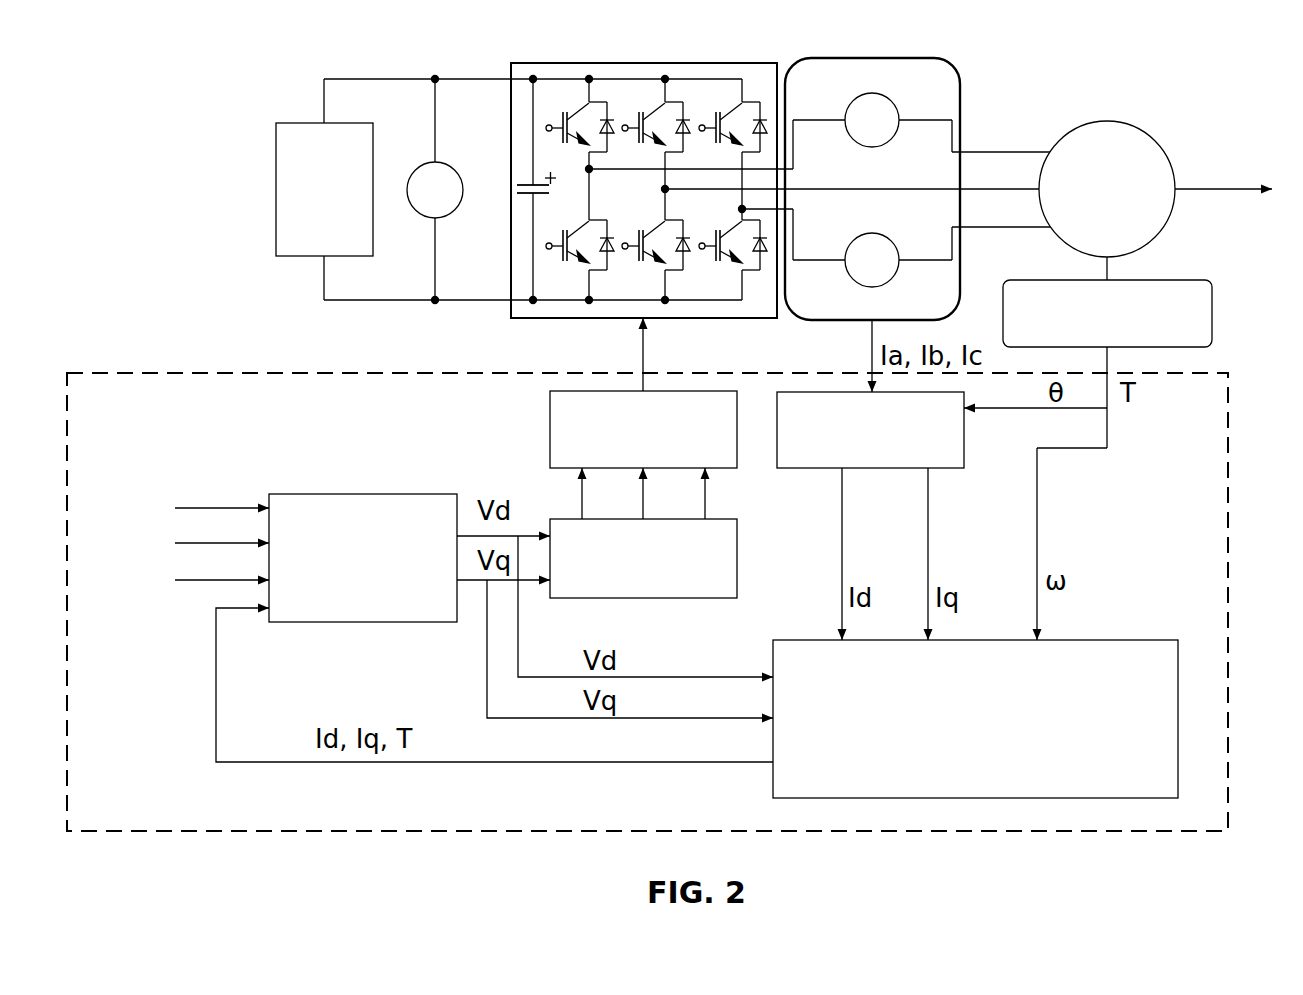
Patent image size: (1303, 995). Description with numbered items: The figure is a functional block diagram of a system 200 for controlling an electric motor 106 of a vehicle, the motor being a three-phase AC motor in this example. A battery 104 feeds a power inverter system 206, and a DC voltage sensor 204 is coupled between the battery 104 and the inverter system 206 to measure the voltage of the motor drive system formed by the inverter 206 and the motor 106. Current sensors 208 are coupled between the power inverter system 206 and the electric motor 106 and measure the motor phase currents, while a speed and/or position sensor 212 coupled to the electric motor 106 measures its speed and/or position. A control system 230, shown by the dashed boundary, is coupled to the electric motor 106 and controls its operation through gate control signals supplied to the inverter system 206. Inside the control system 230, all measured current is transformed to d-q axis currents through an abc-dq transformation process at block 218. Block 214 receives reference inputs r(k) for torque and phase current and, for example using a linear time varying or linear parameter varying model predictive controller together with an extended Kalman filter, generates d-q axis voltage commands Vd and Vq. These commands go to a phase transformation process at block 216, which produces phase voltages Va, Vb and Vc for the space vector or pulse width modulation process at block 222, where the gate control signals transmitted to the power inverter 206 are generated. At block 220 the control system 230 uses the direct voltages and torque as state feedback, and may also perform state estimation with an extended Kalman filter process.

The system 200 is at (160, 50).
The battery 104 is at (276, 190).
The DC voltage sensor 204 is at (445, 163).
The power inverter system 206 is at (580, 63).
The current sensors 208 is at (858, 58).
The electric motor 106 is at (1135, 125).
The speed and/or position sensor 212 is at (1140, 280).
The control system 230 is at (165, 373).
The model predictive controller block 214 is at (338, 494).
The phase transformation block 216 is at (668, 598).
The abc-dq transformation block 218 is at (940, 468).
The state feedback block 220 is at (1105, 640).
The PWM block 222 is at (550, 430).